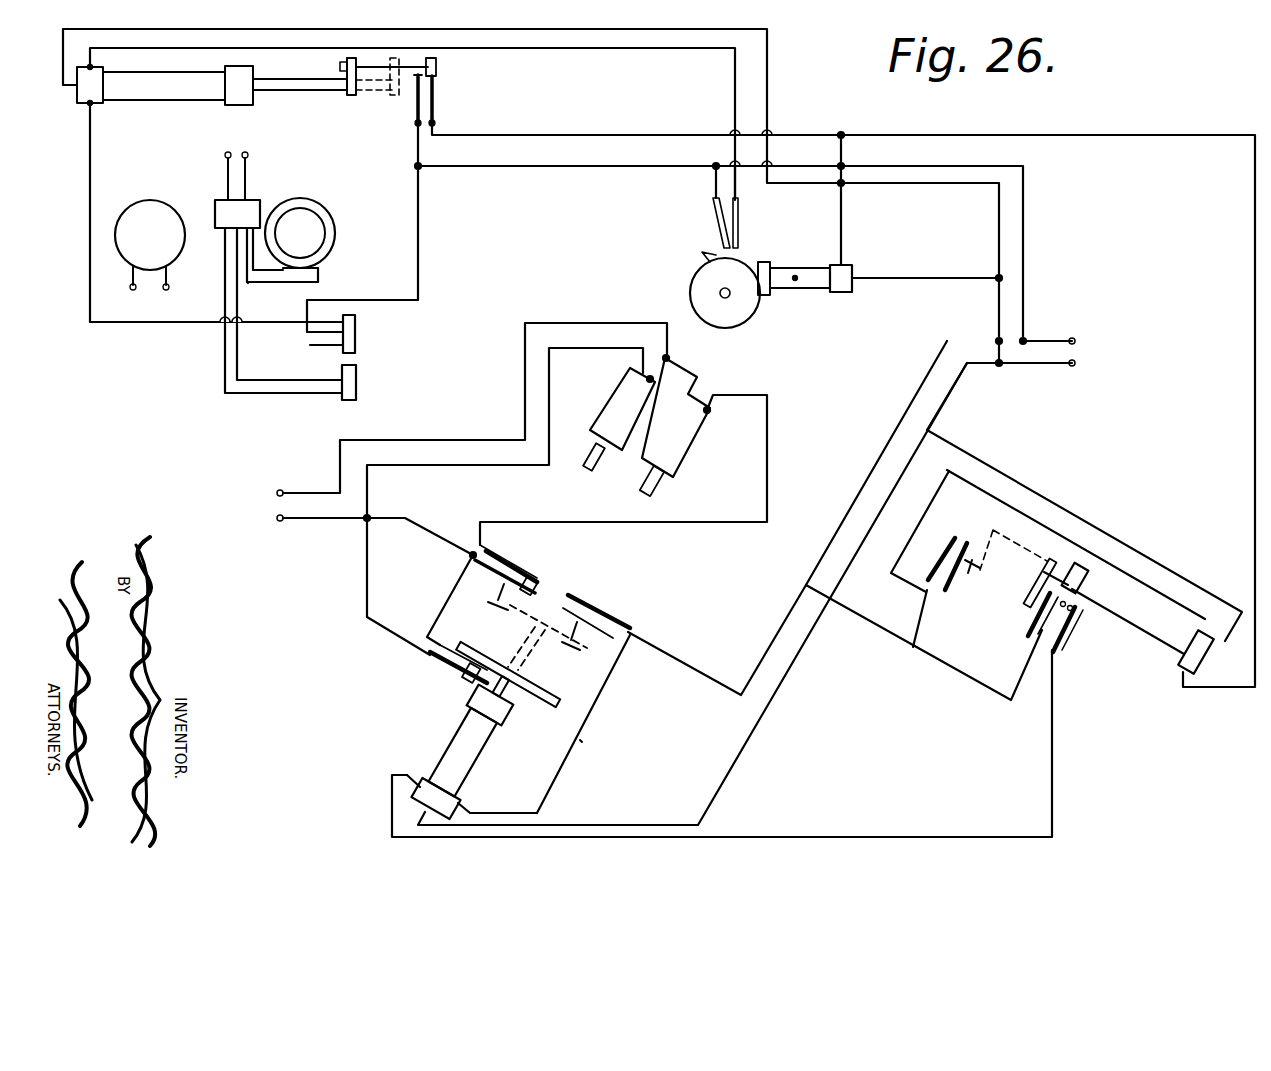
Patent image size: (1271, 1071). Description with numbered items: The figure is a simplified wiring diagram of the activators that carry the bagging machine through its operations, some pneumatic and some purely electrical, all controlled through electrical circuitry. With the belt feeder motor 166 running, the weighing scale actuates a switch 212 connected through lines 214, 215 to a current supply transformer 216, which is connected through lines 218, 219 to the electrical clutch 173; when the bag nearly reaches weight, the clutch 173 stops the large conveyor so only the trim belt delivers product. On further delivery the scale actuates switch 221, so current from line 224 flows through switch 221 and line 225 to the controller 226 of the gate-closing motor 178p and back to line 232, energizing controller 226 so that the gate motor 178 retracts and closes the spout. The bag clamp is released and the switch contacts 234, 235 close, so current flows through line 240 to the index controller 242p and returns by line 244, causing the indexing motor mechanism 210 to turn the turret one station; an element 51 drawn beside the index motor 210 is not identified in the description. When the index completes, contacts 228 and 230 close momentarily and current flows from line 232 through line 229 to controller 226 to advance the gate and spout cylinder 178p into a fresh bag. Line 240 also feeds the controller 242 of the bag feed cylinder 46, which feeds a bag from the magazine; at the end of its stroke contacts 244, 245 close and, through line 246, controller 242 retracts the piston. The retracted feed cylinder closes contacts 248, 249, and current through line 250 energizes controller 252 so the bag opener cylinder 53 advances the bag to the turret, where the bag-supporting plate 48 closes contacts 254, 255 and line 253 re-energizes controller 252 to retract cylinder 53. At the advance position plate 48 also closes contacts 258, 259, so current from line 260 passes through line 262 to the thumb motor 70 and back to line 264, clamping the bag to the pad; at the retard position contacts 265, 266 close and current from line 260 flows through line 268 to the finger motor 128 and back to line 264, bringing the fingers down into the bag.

The line 232 is at (222, 33).
The line 229 is at (142, 58).
The line 240 is at (624, 135).
The line 224 is at (542, 165).
The line 244 is at (892, 288).
The controller 226 is at (77, 104).
The gate-closing motor 178p is at (138, 103).
The gate motor 178 is at (293, 90).
The contact 235 is at (403, 90).
The contact 234 is at (436, 90).
The line 225 is at (104, 324).
The belt feeder motor 166 is at (150, 206).
The current supply transformer 216 is at (214, 210).
The electrical clutch 173 is at (365, 198).
The line 219 is at (320, 277).
The line 218 is at (262, 284).
The switch 221 is at (355, 334).
The line 215 is at (225, 377).
The line 214 is at (240, 352).
The switch 212 is at (357, 392).
The contact 230 is at (712, 219).
The contact 228 is at (738, 220).
The cam 51 is at (722, 293).
The indexing motor mechanism 210 is at (795, 293).
The controller 242p is at (854, 272).
The line 264 is at (320, 493).
The line 268 is at (365, 608).
The line 260 is at (305, 520).
The line 262 is at (767, 408).
The finger motor 128 is at (618, 398).
The thumb motor 70 is at (685, 452).
The contact 259 is at (506, 563).
The contact 258 is at (492, 588).
The contact 265 is at (508, 636).
The contact 254 is at (600, 608).
The contact 255 is at (592, 636).
The contact 266 is at (432, 678).
The bag-supporting plate 48 is at (504, 702).
The bag opener cylinder 53 is at (456, 739).
The controller 252 is at (448, 791).
The line 253 is at (580, 744).
The line 250 is at (390, 818).
The line 246 is at (1057, 520).
The controller 242 is at (1178, 658).
The bag feed cylinder 46 is at (1100, 606).
The contact 248 is at (1035, 637).
The contact 249 is at (1068, 640).
The contact 245 is at (949, 537).